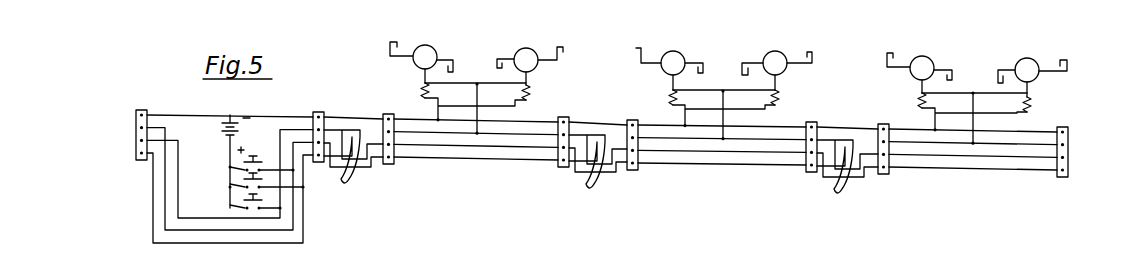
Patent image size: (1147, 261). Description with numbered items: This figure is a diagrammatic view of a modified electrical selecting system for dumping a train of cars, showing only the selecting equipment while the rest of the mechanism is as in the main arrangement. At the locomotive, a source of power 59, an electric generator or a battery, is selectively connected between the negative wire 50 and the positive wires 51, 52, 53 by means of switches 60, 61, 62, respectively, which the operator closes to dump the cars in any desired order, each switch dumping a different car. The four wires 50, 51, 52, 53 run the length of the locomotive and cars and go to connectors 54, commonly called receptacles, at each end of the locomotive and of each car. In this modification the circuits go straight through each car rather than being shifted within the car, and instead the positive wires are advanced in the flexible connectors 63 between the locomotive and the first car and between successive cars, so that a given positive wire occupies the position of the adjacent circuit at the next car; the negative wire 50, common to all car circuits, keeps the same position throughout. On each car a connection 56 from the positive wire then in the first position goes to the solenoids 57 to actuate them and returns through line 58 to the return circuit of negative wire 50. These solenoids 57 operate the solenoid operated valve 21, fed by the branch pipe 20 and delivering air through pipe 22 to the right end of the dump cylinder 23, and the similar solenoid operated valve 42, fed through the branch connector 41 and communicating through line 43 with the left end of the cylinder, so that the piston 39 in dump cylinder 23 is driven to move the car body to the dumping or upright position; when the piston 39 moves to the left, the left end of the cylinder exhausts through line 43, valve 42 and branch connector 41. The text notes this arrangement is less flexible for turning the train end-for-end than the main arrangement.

The branch pipe 20 is at (742, 66).
The solenoid operated valve 21 is at (516, 51).
The pipe 22 is at (1068, 65).
The dump cylinder 23 is at (455, 244).
The piston 39 is at (414, 245).
The branch connector 41 is at (954, 74).
The solenoid operated valve 42 is at (436, 50).
The line 43 is at (637, 52).
The negative wire 50 is at (172, 115).
The positive wire 51 is at (178, 178).
The positive wire 52 is at (165, 199).
The positive wire 53 is at (153, 216).
The connector 54 is at (136, 111).
The connection 56 is at (479, 108).
The solenoid 57 is at (421, 91).
The line 58 is at (438, 108).
The source of power 59 is at (222, 131).
The switch 60 is at (229, 167).
The switch 61 is at (229, 185).
The switch 62 is at (229, 206).
The flexible connector 63 is at (603, 160).